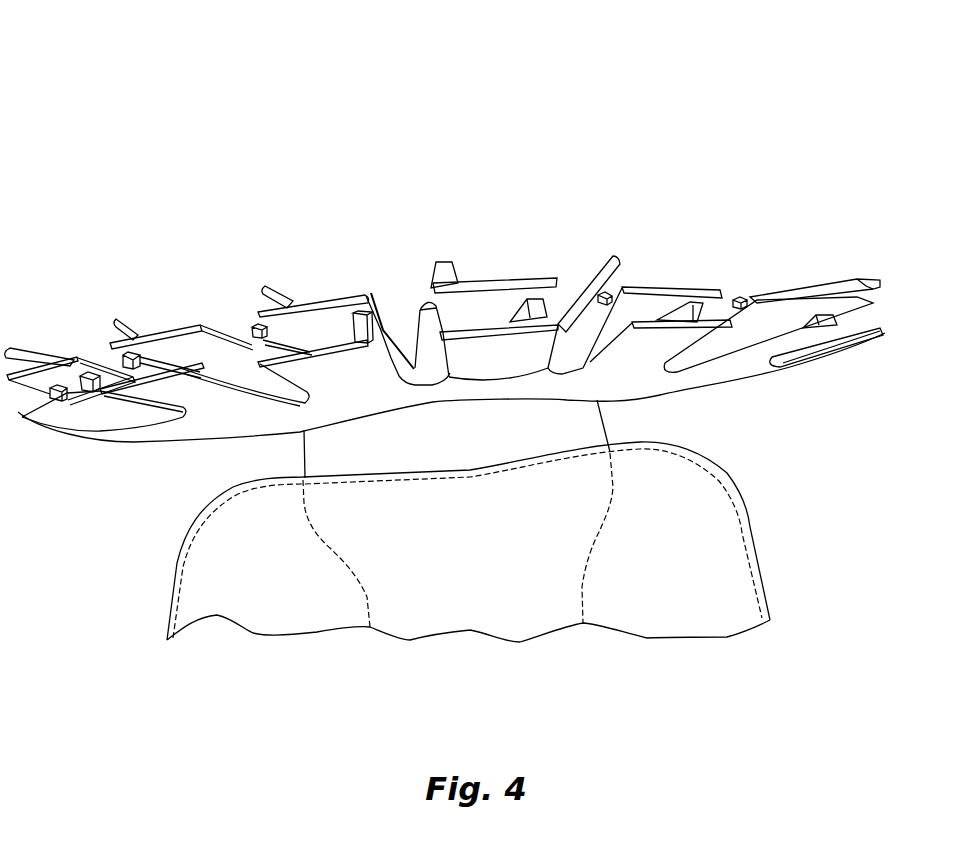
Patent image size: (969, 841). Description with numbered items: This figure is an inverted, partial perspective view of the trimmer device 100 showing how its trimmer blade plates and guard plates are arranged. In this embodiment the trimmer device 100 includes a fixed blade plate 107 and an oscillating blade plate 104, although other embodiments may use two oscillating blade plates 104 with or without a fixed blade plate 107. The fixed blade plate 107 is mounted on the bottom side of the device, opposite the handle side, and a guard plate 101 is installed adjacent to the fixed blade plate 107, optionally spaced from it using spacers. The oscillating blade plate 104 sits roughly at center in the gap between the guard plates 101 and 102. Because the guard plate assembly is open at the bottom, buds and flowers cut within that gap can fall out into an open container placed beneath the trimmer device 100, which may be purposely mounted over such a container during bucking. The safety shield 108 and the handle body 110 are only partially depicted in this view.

The trimmer device 100 is at (393, 135).
The guard plate 101 is at (645, 283).
The guard plate 102 is at (270, 418).
The oscillating blade plate 104 is at (428, 364).
The fixed blade plate 107 is at (440, 260).
The safety shield 108 is at (748, 522).
The handle body 110 is at (340, 558).